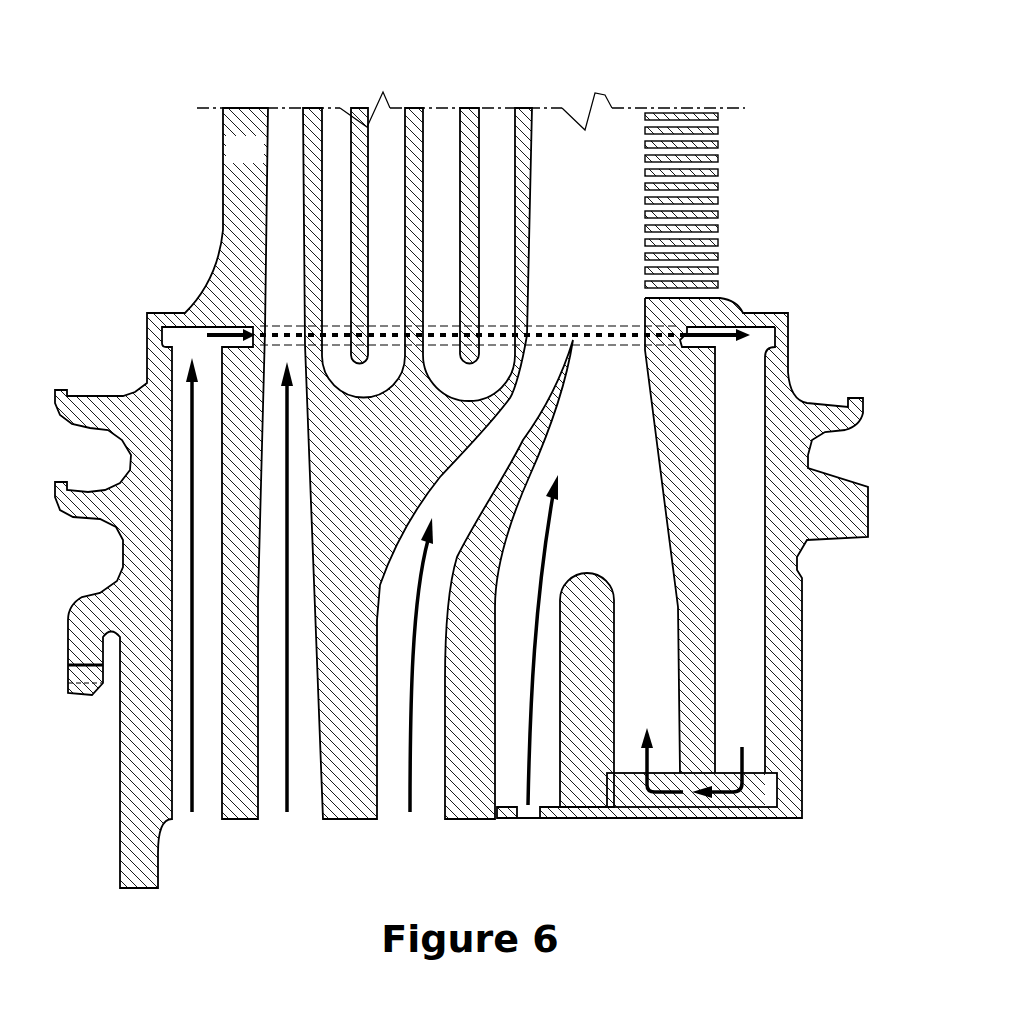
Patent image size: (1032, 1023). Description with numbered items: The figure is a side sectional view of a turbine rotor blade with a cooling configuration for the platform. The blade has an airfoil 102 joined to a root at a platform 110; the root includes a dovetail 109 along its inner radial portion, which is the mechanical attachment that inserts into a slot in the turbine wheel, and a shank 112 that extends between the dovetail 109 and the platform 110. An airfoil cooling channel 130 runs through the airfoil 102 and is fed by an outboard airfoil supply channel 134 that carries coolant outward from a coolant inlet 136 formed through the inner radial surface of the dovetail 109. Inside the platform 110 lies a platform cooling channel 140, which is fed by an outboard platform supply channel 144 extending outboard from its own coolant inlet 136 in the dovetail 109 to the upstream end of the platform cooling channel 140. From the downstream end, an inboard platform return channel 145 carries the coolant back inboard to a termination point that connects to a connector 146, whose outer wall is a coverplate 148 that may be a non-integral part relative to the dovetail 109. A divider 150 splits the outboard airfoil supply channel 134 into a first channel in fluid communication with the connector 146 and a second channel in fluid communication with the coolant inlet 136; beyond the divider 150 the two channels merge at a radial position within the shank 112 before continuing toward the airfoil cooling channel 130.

The airfoil 102 is at (228, 162).
The dovetail 109 is at (120, 750).
The platform 110 is at (160, 313).
The shank 112 is at (125, 490).
The airfoil cooling channel 130 is at (493, 130).
The outboard airfoil supply channel 134 is at (315, 475).
The coolant inlet 136 is at (205, 822).
The platform cooling channel 140 is at (243, 335).
The outboard platform supply channel 144 is at (173, 653).
The inboard platform return channel 145 is at (765, 375).
The connector 146 is at (780, 787).
The coverplate 148 is at (620, 819).
The divider 150 is at (595, 650).